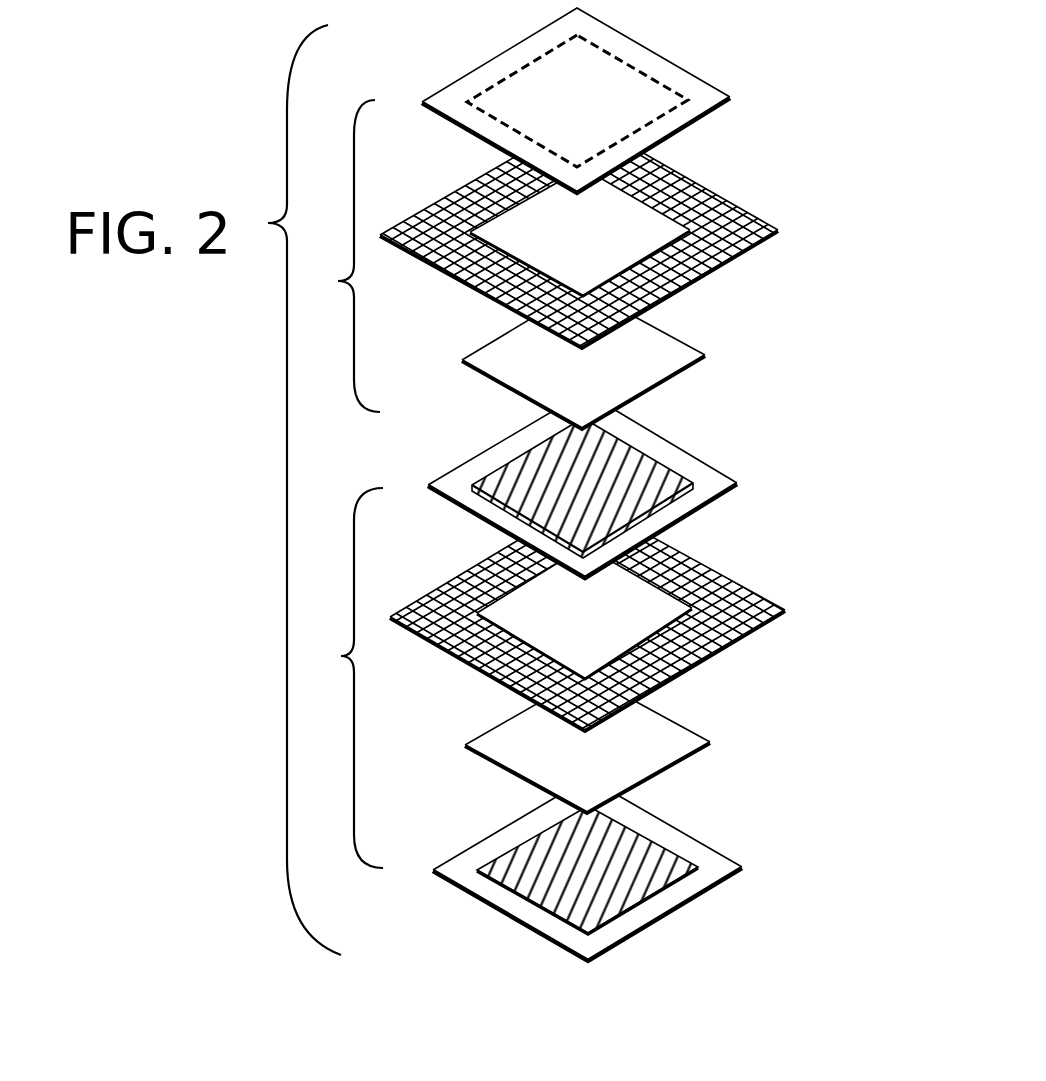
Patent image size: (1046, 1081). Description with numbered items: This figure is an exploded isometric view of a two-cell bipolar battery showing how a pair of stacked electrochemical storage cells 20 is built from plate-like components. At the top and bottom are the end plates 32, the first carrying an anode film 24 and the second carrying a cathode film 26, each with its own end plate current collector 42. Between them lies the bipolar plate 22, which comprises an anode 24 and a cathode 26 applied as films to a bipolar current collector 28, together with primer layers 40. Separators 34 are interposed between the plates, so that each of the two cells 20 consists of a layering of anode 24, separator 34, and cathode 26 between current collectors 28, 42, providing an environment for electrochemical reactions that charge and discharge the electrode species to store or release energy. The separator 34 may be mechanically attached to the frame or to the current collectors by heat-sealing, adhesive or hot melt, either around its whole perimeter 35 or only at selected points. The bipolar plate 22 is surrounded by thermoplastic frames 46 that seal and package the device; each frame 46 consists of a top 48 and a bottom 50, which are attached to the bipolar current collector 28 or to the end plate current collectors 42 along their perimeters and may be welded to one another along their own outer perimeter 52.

The electrochemical energy storage cell 20 is at (342, 484).
The bipolar plate 22 is at (635, 467).
The anode 24 is at (602, 471).
The cathode 26 is at (630, 870).
The bipolar current collector 28 is at (616, 485).
The end plate 32 is at (627, 869).
The separator 34 is at (595, 550).
The perimeter of the separator 35 is at (507, 362).
The primer layer 40 is at (698, 105).
The end plate current collector 42 is at (505, 50).
The frame 46 is at (624, 424).
The top 48 is at (778, 232).
The bottom 50 is at (833, 590).
The outer perimeter 52 is at (440, 238).